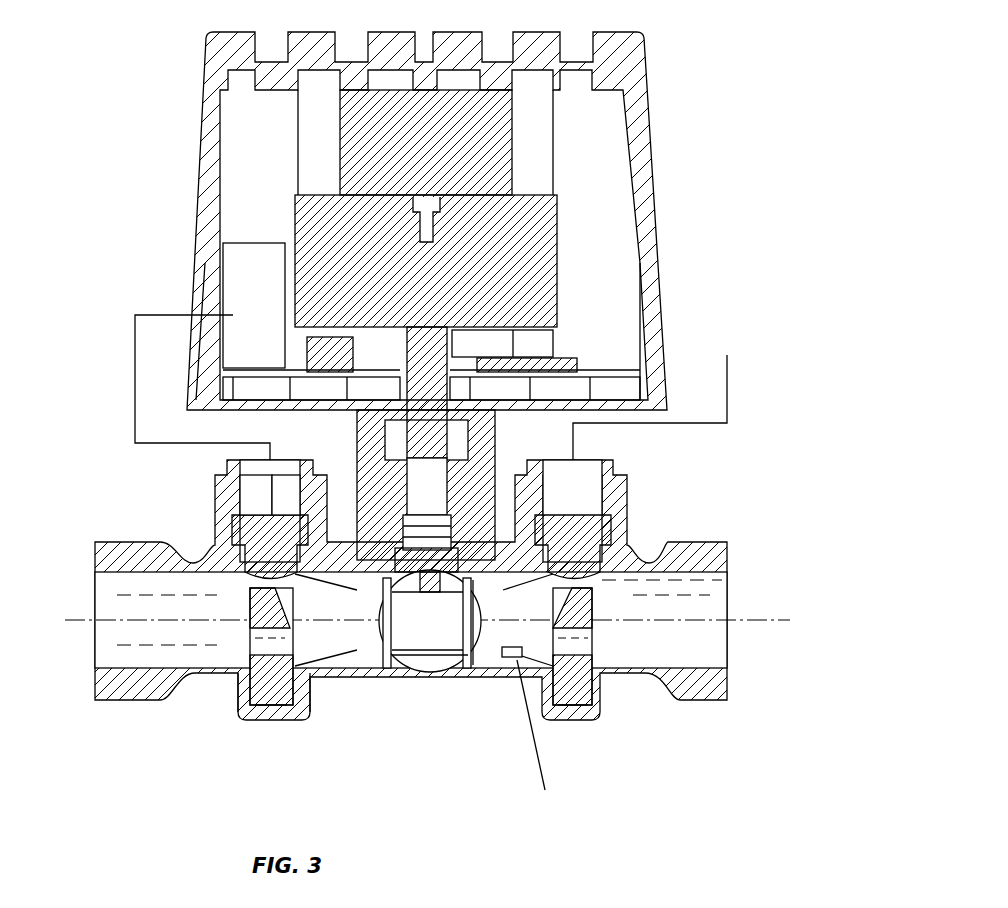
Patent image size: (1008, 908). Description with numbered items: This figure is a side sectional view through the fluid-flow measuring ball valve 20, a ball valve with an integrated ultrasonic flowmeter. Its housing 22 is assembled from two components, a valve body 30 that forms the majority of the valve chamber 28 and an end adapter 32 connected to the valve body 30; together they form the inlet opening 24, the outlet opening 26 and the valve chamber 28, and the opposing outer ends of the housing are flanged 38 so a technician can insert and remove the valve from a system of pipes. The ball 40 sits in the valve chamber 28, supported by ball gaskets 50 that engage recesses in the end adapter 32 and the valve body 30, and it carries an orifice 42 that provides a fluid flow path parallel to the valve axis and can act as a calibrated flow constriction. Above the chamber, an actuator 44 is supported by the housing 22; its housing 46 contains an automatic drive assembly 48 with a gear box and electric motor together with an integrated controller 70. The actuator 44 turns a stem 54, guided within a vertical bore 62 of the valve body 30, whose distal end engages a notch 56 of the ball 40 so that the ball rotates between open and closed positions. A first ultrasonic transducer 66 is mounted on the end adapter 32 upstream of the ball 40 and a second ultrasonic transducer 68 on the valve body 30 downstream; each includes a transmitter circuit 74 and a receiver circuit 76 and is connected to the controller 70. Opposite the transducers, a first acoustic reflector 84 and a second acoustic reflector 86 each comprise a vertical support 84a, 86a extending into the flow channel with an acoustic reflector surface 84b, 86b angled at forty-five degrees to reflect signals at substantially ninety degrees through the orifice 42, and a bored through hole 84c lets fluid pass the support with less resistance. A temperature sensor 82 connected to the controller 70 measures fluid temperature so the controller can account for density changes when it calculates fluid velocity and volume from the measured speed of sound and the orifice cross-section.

The fluid-flow measuring ball valve 20 is at (790, 96).
The housing 22 is at (752, 457).
The inlet opening 24 is at (95, 668).
The outlet opening 26 is at (727, 580).
The valve chamber 28 is at (447, 690).
The valve body 30 is at (648, 563).
The end adapter 32 is at (193, 563).
The flanged outer ends 38 is at (103, 540).
The ball 40 is at (405, 688).
The orifice 42 is at (440, 660).
The actuator 44 is at (688, 66).
The housing 46 is at (657, 198).
The automatic drive assembly 48 is at (426, 208).
The ball gaskets 50 is at (380, 688).
The stem 54 is at (440, 485).
The notch 56 is at (420, 567).
The vertical bore 62 is at (373, 470).
The first ultrasonic transducer 66 is at (216, 565).
The second ultrasonic transducer 68 is at (640, 557).
The controller 70 is at (233, 258).
The transmitter circuit 74 is at (257, 483).
The receiver circuit 76 is at (287, 480).
The temperature sensor 82 is at (508, 668).
The first acoustic reflector 84 is at (265, 680).
The vertical support 84a is at (273, 703).
The acoustic reflector surface 84b is at (280, 605).
The bored through hole 84c is at (250, 647).
The second acoustic reflector 86 is at (584, 676).
The vertical support 86a is at (565, 708).
The acoustic reflector surface 86b is at (558, 603).